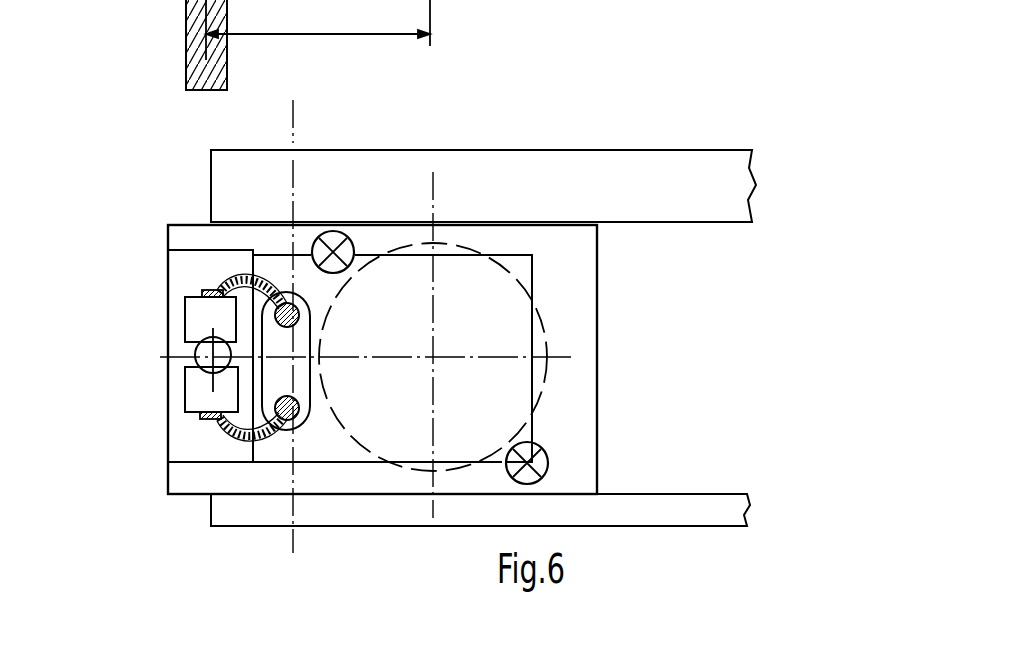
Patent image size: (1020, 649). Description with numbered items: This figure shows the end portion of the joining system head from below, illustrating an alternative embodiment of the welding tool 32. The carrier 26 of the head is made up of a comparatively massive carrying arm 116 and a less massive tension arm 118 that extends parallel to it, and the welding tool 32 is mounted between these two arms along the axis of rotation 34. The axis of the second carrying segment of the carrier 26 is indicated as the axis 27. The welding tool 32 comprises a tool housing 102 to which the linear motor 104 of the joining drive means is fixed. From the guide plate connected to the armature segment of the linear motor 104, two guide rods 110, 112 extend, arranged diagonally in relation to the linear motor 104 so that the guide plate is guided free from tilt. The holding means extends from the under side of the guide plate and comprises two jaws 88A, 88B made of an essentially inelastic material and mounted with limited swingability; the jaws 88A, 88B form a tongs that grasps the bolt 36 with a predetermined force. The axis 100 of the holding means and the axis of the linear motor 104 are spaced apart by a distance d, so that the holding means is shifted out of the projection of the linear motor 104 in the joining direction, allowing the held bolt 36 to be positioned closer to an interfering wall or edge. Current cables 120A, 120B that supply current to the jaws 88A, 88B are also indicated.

The elongated carrier 26 is at (483, 264).
The axis of the second carrying segment 27 is at (382, 357).
The welding tool 32 is at (348, 318).
The axis of rotation 34 is at (293, 120).
The bolt 36 is at (203, 363).
The jaw 88A is at (200, 325).
The jaw 88B is at (200, 392).
The axis of the holding means 100 is at (157, 0).
The tool housing 102 is at (185, 237).
The linear motor 104 is at (470, 255).
The guide rod 110 is at (345, 247).
The guide rod 112 is at (543, 455).
The carrying arm 116 is at (558, 175).
The tension arm 118 is at (678, 510).
The current cable 120A is at (235, 276).
The current cable 120B is at (183, 440).
The distance d is at (318, 23).